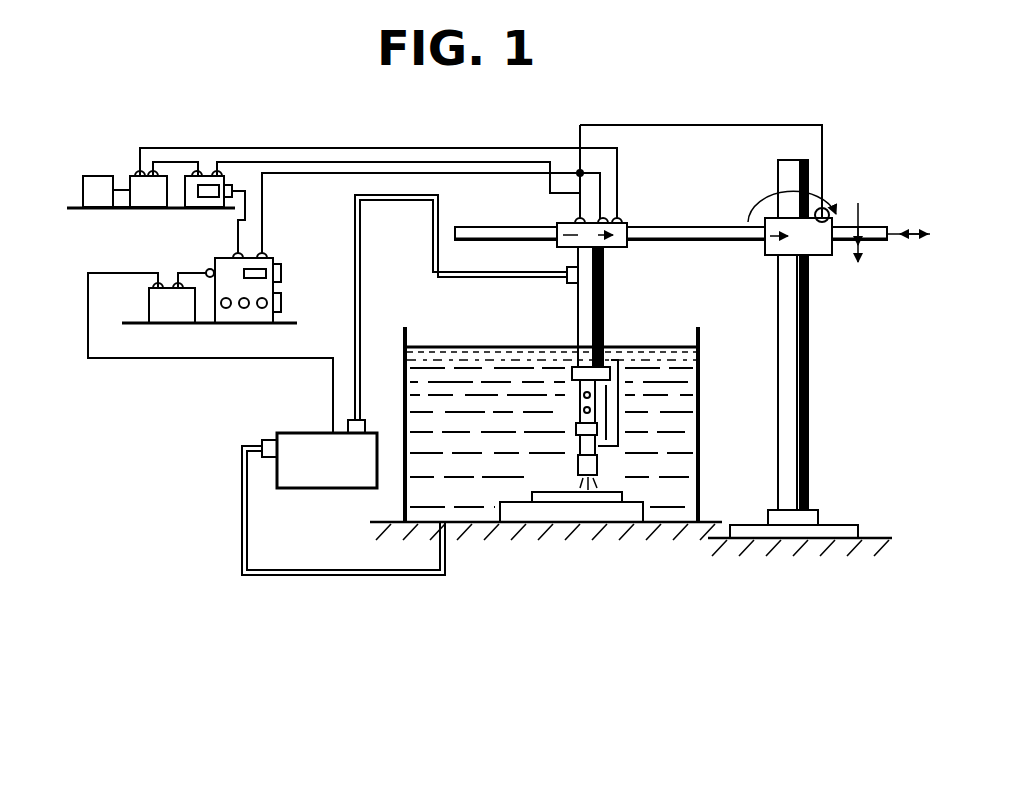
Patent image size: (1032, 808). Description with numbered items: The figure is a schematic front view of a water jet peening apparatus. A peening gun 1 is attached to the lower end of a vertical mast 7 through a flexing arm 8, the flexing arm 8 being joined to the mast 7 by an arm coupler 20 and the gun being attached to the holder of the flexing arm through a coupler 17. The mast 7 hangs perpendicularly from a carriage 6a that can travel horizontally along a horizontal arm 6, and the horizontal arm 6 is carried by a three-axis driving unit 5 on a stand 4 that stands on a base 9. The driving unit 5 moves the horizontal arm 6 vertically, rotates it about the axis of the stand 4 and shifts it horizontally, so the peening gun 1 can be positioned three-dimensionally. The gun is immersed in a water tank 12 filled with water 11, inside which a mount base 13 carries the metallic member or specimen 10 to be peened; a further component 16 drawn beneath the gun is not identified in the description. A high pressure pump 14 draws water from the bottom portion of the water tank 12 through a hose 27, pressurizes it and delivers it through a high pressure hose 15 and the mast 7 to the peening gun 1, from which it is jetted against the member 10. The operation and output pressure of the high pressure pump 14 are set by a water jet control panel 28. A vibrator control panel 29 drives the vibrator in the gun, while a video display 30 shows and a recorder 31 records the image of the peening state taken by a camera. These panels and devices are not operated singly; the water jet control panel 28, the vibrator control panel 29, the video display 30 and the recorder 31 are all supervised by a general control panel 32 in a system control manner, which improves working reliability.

The peening gun 1 is at (606, 464).
The stand 4 is at (778, 290).
The three-axis driving unit 5 is at (830, 256).
The horizontal arm 6 is at (711, 228).
The carriage 6a is at (620, 250).
The mast 7 is at (606, 316).
The flexing arm 8 is at (578, 415).
The base 9 is at (840, 526).
The metallic member 10 is at (533, 497).
The water 11 is at (438, 360).
The water tank 12 is at (700, 392).
The mount base 13 is at (520, 523).
The high pressure pump 14 is at (300, 433).
The high pressure hose 15 is at (395, 200).
The workpiece 16 is at (580, 480).
The coupler 17 is at (619, 431).
The arm coupler 20 is at (575, 370).
The hose 27 is at (313, 576).
The water jet control panel 28 is at (170, 323).
The vibrator control panel 29 is at (198, 207).
The video display 30 is at (95, 208).
The recorder 31 is at (143, 207).
The general control panel 32 is at (242, 323).